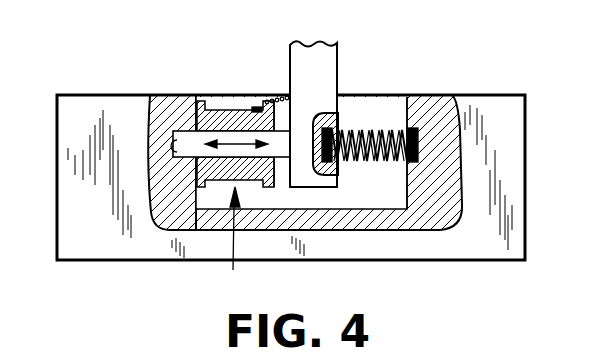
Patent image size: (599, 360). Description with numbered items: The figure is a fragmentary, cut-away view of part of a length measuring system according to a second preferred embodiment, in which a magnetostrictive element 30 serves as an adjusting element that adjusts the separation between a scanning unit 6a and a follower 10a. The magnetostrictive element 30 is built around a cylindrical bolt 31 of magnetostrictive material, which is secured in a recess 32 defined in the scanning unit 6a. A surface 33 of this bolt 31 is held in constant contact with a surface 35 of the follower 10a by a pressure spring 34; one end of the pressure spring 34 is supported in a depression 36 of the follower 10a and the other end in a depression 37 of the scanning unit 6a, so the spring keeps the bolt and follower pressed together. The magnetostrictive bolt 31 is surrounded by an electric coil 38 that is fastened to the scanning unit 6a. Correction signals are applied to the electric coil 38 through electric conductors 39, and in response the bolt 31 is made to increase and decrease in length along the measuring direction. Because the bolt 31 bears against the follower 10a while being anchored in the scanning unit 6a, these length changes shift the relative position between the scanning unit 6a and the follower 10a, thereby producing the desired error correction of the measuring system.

The scanning unit 6a is at (511, 242).
The follower 10a is at (333, 63).
The magnetostrictive element 30 is at (233, 270).
The cylindrical bolt 31 is at (217, 152).
The recess 32 is at (170, 148).
The surface of the bolt 33 is at (295, 155).
The pressure spring 34 is at (405, 168).
The surface of the follower 35 is at (286, 152).
The depression of the follower 36 is at (402, 148).
The depression of the scanning unit 37 is at (430, 157).
The electric coil 38 is at (160, 194).
The electric conductors 39 is at (263, 101).